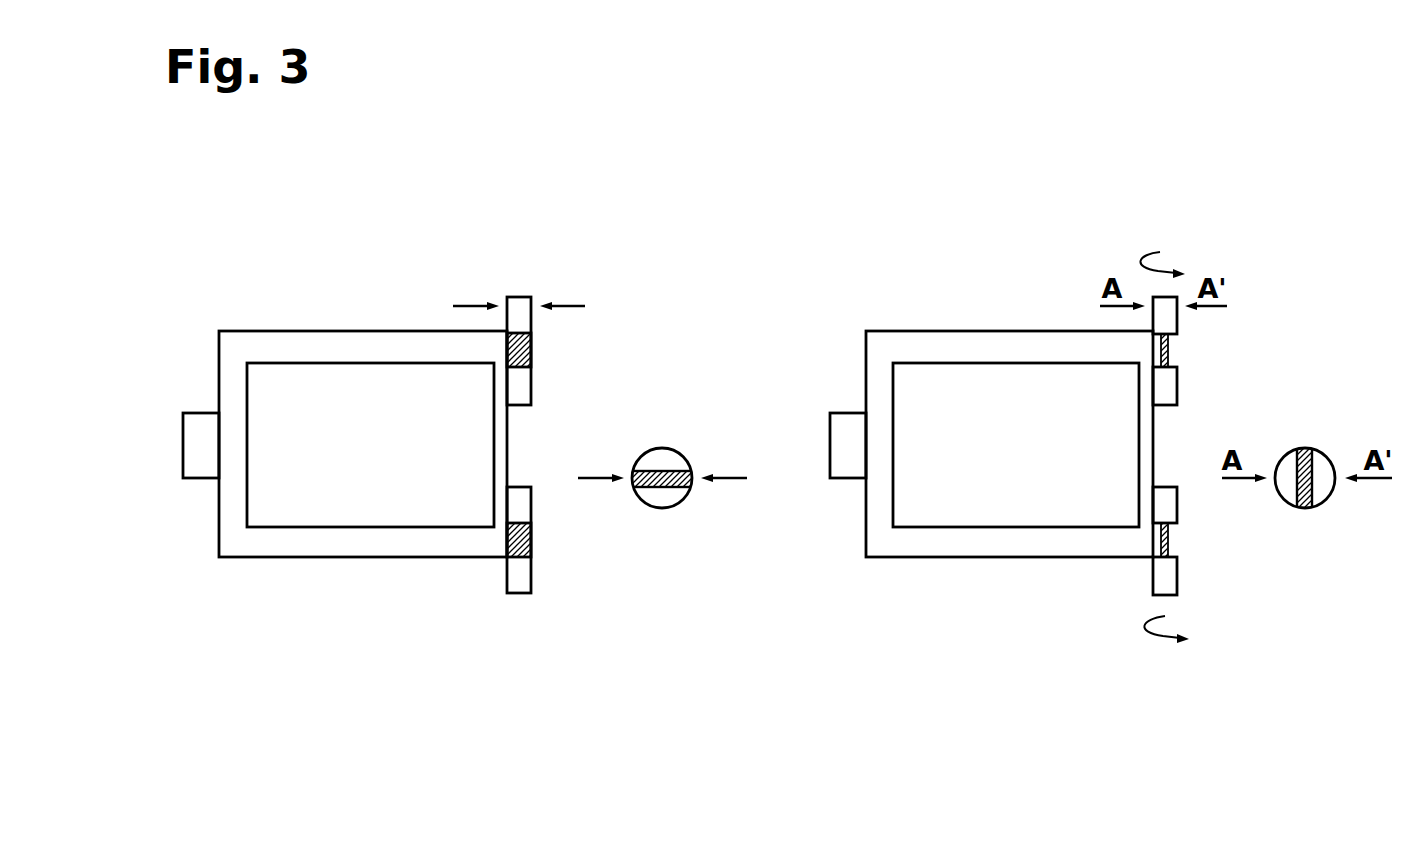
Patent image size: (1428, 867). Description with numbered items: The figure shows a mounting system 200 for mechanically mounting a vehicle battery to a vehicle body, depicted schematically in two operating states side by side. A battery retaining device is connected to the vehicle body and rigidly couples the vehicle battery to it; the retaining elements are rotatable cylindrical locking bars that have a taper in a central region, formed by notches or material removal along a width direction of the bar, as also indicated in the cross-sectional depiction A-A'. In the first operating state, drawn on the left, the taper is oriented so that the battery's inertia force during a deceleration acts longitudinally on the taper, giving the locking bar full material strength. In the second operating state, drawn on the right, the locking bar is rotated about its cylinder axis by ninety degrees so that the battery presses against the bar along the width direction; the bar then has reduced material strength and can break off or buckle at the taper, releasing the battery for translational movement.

The mounting system 200 is at (204, 280).